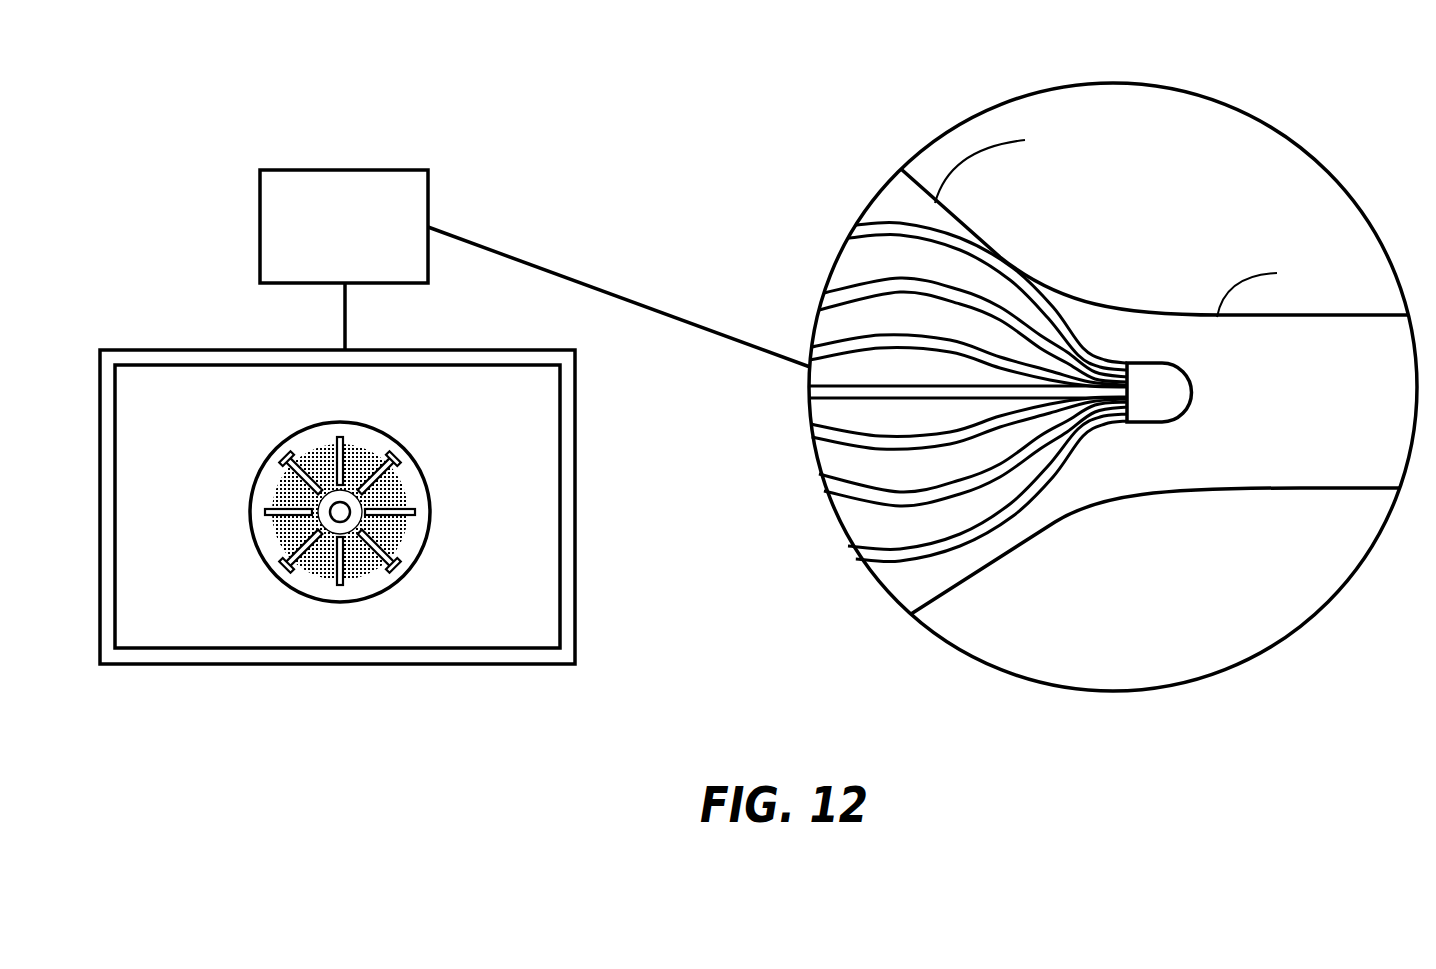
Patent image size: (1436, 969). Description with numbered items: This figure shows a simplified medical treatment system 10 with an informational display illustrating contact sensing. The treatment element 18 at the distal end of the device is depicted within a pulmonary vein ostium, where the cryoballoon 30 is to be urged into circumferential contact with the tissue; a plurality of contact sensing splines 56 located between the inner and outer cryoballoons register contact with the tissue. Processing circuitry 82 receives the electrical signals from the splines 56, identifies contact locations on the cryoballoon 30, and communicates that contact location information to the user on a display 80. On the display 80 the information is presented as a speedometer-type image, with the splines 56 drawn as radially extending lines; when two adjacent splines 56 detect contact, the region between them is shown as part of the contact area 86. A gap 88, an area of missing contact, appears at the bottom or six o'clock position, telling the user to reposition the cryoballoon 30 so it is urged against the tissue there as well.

The system 10 is at (462, 112).
The treatment element 18 is at (845, 232).
The cryoballoon 30 is at (1050, 303).
The splines 56 is at (1015, 393).
The display 80 is at (576, 603).
The processing circuitry 82 is at (333, 240).
The contact area 86 is at (407, 527).
The gap 88 is at (363, 570).